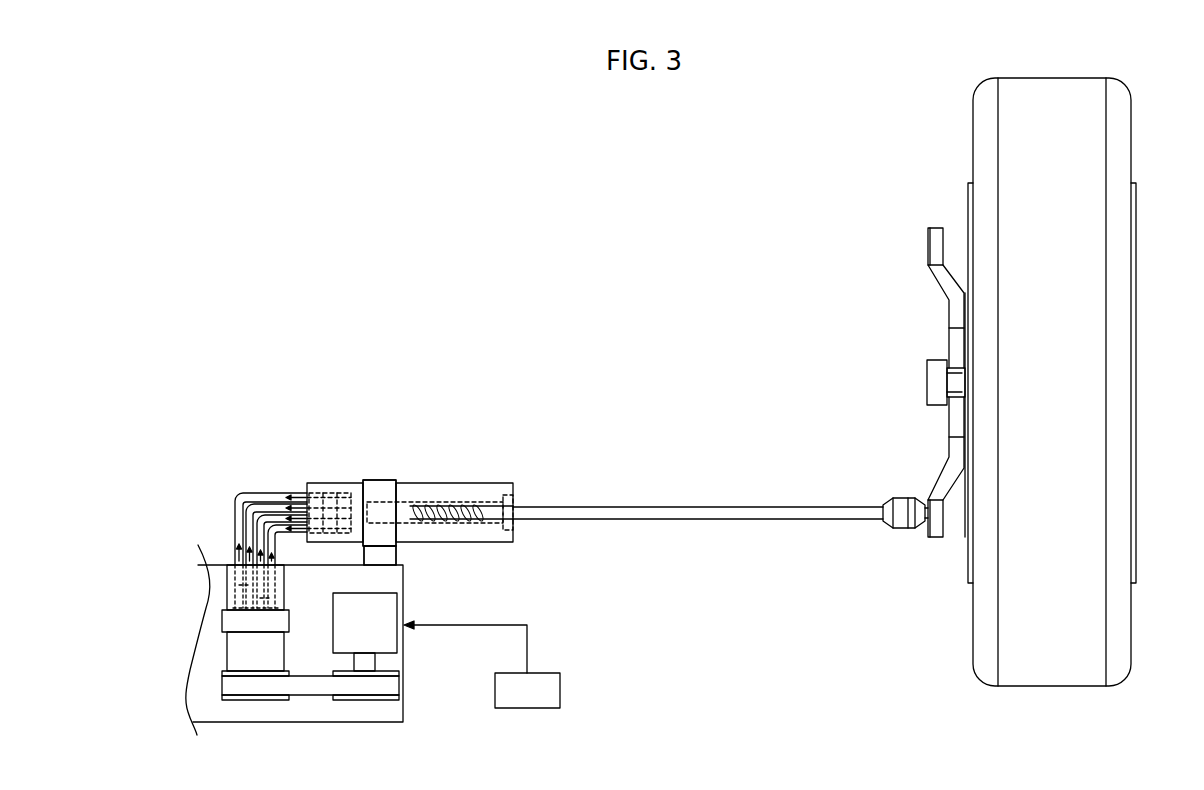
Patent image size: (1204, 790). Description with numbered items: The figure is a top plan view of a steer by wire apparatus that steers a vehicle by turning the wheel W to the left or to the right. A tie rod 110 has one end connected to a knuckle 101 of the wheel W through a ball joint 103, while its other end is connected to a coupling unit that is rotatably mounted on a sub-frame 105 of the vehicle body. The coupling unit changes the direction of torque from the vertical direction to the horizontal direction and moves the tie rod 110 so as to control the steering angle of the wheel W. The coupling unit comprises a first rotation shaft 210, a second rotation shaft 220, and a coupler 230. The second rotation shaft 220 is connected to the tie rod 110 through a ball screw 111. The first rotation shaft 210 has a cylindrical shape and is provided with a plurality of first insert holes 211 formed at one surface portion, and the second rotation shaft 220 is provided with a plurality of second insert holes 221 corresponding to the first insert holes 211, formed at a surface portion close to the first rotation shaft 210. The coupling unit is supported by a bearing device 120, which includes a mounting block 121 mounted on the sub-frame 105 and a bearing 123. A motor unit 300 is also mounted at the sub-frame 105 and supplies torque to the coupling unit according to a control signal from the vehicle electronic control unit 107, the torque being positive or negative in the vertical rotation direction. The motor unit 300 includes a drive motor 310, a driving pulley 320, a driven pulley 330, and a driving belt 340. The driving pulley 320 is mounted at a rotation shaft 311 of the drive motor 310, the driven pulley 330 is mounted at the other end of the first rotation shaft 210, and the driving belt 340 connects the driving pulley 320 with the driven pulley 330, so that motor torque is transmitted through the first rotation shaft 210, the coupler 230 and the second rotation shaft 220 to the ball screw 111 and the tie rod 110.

The wheel W is at (1093, 125).
The knuckle 101 is at (927, 249).
The ball joint 103 is at (900, 498).
The sub-frame 105 is at (256, 719).
The vehicle ECU 107 is at (560, 690).
The tie rod 110 is at (747, 507).
The ball screw 111 is at (467, 523).
The bearing device 120 is at (430, 414).
The mounting block 121 is at (394, 553).
The bearing 123 is at (372, 483).
The first rotation shaft 210 is at (233, 654).
The first insert holes 211 is at (237, 590).
The second rotation shaft 220 is at (487, 483).
The second insert holes 221 is at (326, 490).
The coupler 230 is at (272, 503).
The motor unit 300 is at (412, 614).
The drive motor 310 is at (392, 600).
The rotation shaft 311 is at (377, 659).
The driving pulley 320 is at (399, 697).
The driven pulley 330 is at (222, 700).
The driving belt 340 is at (313, 690).